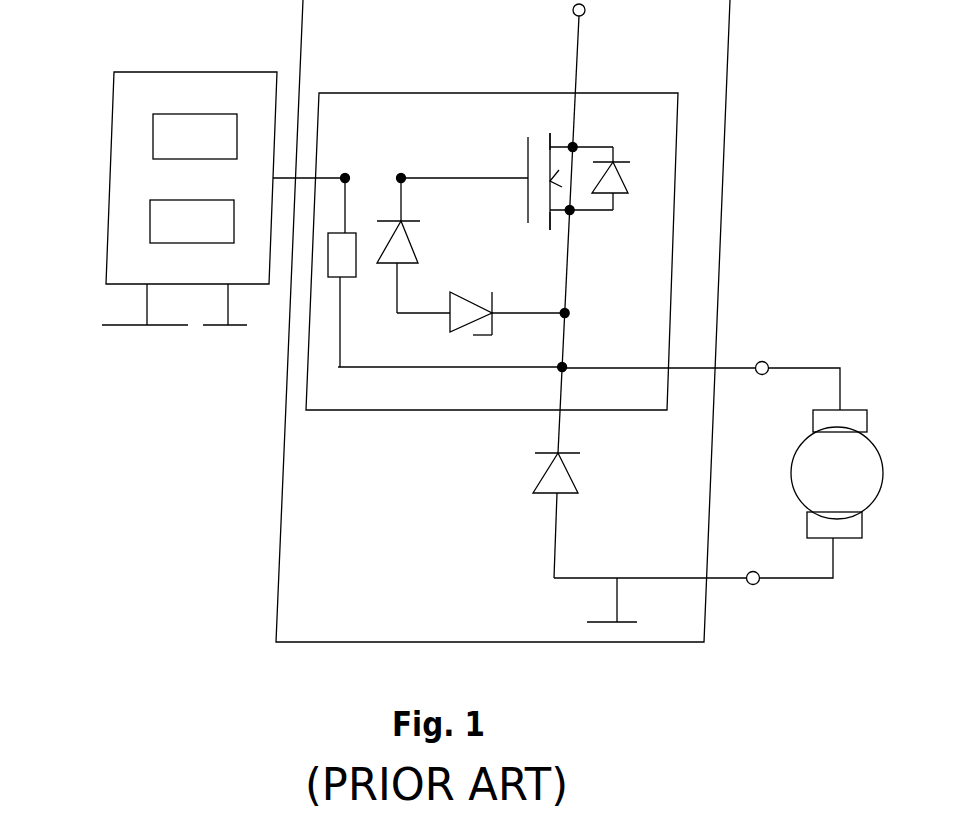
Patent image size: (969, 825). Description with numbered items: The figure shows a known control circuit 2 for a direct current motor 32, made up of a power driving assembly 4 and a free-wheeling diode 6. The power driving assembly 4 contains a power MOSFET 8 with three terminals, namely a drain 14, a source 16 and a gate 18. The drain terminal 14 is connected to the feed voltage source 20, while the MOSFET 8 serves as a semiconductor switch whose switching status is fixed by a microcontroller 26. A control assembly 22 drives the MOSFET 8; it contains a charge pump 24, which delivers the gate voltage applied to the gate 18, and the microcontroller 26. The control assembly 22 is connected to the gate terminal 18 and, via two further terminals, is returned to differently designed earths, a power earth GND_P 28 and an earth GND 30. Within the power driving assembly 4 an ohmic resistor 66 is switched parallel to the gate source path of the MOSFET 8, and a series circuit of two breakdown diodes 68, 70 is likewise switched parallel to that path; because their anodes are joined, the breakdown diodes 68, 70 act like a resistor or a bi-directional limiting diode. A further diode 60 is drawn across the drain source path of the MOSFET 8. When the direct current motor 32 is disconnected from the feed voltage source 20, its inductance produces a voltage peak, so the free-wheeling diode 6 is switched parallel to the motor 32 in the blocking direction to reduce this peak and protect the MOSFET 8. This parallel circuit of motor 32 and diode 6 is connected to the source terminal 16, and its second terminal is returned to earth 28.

The control circuit 2 is at (730, 43).
The power driving assembly 4 is at (427, 93).
The free-wheeling diode 6 is at (545, 473).
The power MOSFET 8 is at (600, 147).
The drain terminal 14 is at (550, 133).
The source terminal 16 is at (550, 230).
The gate terminal 18 is at (528, 158).
The feed voltage source 20 is at (572, 14).
The control assembly 22 is at (145, 72).
The charge pump 24 is at (153, 135).
The microcontroller 26 is at (150, 221).
The earth GND_P 28 is at (228, 330).
The earth GND 30 is at (142, 330).
The direct current motor 32 is at (792, 458).
The diode 60 is at (625, 185).
The ohmic resistor 66 is at (348, 277).
The breakdown diode 68 is at (473, 327).
The breakdown diode 70 is at (432, 260).